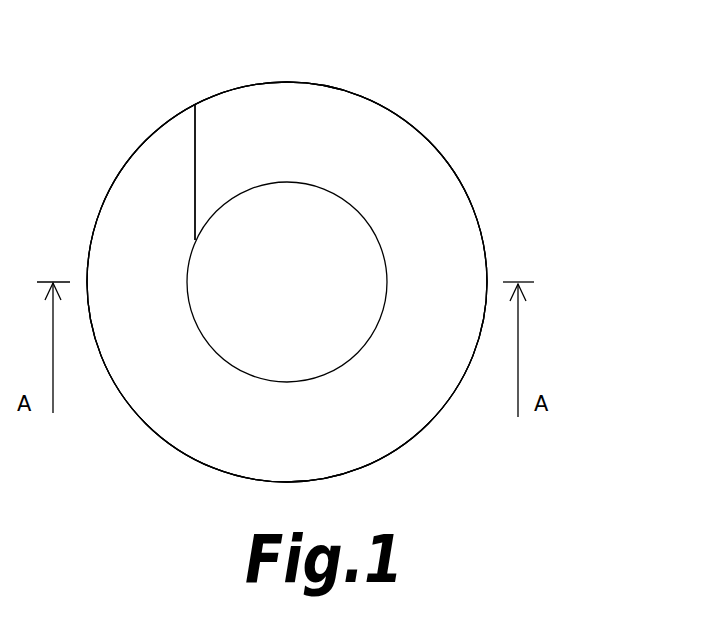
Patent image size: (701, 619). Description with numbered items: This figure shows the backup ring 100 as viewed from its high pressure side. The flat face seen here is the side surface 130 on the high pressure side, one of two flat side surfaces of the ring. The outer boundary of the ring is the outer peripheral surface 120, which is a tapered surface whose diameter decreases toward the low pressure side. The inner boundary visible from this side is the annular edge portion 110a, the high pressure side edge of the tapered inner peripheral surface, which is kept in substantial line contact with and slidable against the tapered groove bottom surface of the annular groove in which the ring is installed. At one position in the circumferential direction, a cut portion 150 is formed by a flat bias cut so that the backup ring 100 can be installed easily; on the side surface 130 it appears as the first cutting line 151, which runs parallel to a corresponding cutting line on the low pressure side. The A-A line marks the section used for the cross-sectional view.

The backup ring 100 is at (502, 132).
The annular edge portion 110a is at (386, 283).
The outer peripheral surface 120 is at (468, 198).
The side surface on the high pressure side 130 is at (347, 133).
The cut portion 150 is at (212, 150).
The first cutting line 151 is at (195, 137).